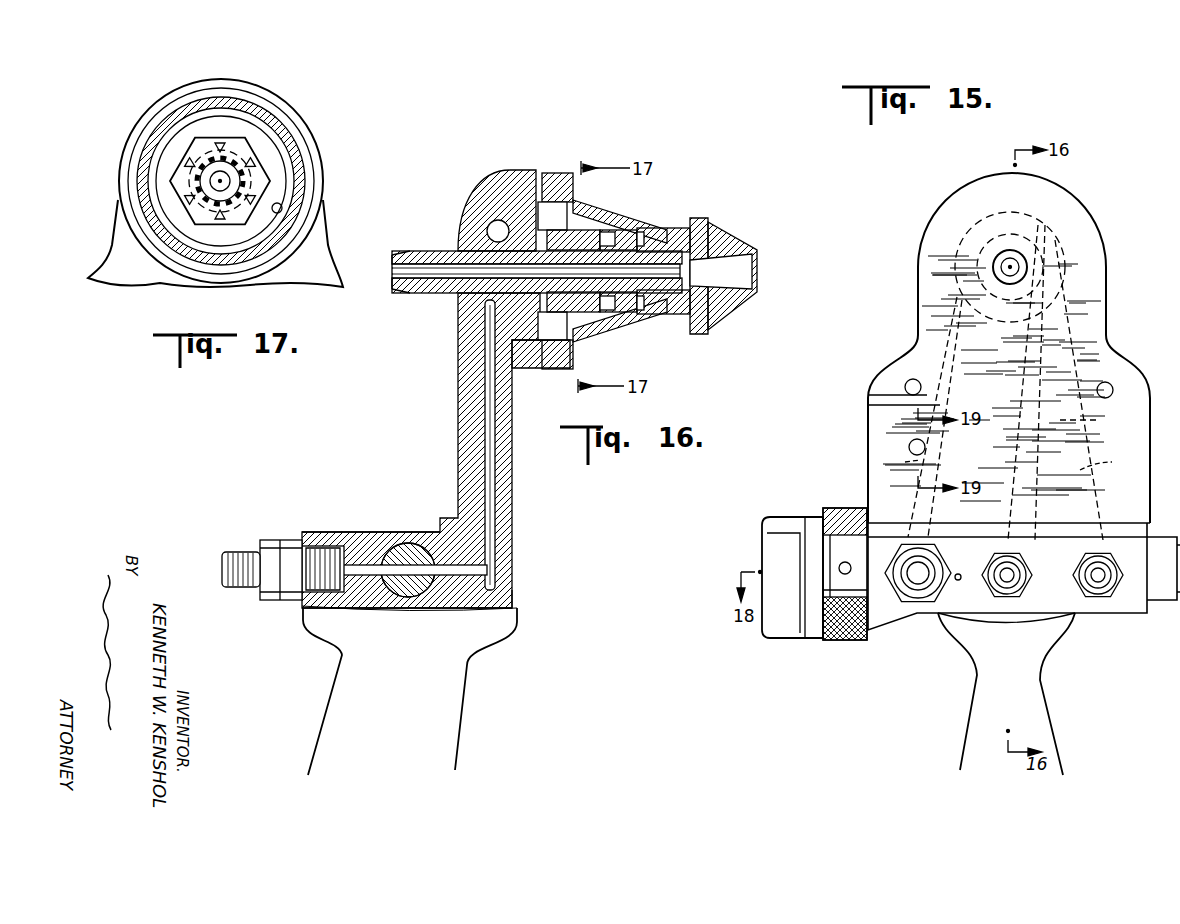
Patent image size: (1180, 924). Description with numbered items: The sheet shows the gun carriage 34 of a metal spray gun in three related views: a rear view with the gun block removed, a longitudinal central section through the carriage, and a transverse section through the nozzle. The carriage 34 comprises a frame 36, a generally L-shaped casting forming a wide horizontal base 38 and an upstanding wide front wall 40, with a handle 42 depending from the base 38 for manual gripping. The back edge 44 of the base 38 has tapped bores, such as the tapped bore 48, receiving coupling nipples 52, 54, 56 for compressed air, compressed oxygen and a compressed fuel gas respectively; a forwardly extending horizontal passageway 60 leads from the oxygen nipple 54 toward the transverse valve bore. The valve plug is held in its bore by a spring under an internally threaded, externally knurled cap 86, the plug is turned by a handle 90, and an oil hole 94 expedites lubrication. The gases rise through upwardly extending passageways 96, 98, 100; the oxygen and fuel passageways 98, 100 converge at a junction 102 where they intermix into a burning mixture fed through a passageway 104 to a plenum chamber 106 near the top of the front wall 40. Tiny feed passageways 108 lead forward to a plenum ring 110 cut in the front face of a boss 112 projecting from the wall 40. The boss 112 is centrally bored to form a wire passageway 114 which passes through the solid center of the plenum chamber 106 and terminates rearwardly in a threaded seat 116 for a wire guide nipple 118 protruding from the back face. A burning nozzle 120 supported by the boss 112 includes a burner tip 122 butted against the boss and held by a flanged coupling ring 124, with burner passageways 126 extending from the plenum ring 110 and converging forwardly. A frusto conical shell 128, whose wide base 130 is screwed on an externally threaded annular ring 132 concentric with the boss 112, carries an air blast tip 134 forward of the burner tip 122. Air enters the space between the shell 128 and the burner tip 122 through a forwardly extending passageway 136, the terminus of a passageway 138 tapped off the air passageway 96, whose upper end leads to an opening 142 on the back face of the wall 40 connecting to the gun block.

In FIG. 16, the gun carriage 34 is at (547, 545).
In FIG. 16, the frame 36 is at (520, 587).
In FIG. 16, the base 38 is at (362, 532).
In FIG. 16, the front wall 40 is at (458, 430).
In FIG. 16, the handle 42 is at (450, 714).
In FIG. 16, the back edge 44 is at (292, 542).
In FIG. 16, the tapped bore 48 is at (322, 548).
In FIG. 15, the coupling nipple 52 is at (920, 598).
In FIG. 16, the coupling nipple 54 is at (238, 588).
In FIG. 15, the coupling nipple 54 is at (1008, 598).
In FIG. 15, the coupling nipple 56 is at (1102, 598).
In FIG. 16, the horizontal passageway 60 is at (398, 556).
In FIG. 15, the cap 86 is at (840, 508).
In FIG. 15, the handle 90 is at (777, 518).
In FIG. 15, the oil hole 94 is at (961, 573).
In FIG. 15, the air passageway 96 is at (899, 470).
In FIG. 15, the passageway 98 is at (1020, 456).
In FIG. 15, the passageway 100 is at (1108, 458).
In FIG. 15, the junction 102 is at (1097, 420).
In FIG. 16, the passageway 104 is at (458, 356).
In FIG. 15, the passageway 104 is at (1092, 326).
In FIG. 16, the plenum chamber 106 is at (487, 226).
In FIG. 15, the plenum chamber 106 is at (1030, 262).
In FIG. 16, the feed passageways 108 is at (455, 293).
In FIG. 16, the plenum ring 110 is at (625, 230).
In FIG. 16, the boss 112 is at (580, 318).
In FIG. 16, the wire passageway 114 is at (520, 268).
In FIG. 16, the threaded seat 116 is at (458, 258).
In FIG. 16, the wire guide nipple 118 is at (400, 293).
In FIG. 17, the burning nozzle 120 is at (160, 180).
In FIG. 16, the burning nozzle 120 is at (672, 232).
In FIG. 17, the burner tip 122 is at (242, 178).
In FIG. 16, the burner tip 122 is at (715, 248).
In FIG. 17, the flanged coupling ring 124 is at (195, 148).
In FIG. 16, the flanged coupling ring 124 is at (585, 230).
In FIG. 16, the burner passageways 126 is at (680, 228).
In FIG. 17, the frusto conical shell 128 is at (272, 126).
In FIG. 16, the frusto conical shell 128 is at (640, 222).
In FIG. 16, the wide base 130 is at (573, 185).
In FIG. 16, the annular ring 132 is at (556, 173).
In FIG. 16, the air blast tip 134 is at (755, 252).
In FIG. 17, the passageway 136 is at (282, 206).
In FIG. 15, the passageway 136 is at (955, 298).
In FIG. 15, the passageway 138 is at (948, 388).
In FIG. 15, the opening 142 is at (914, 440).